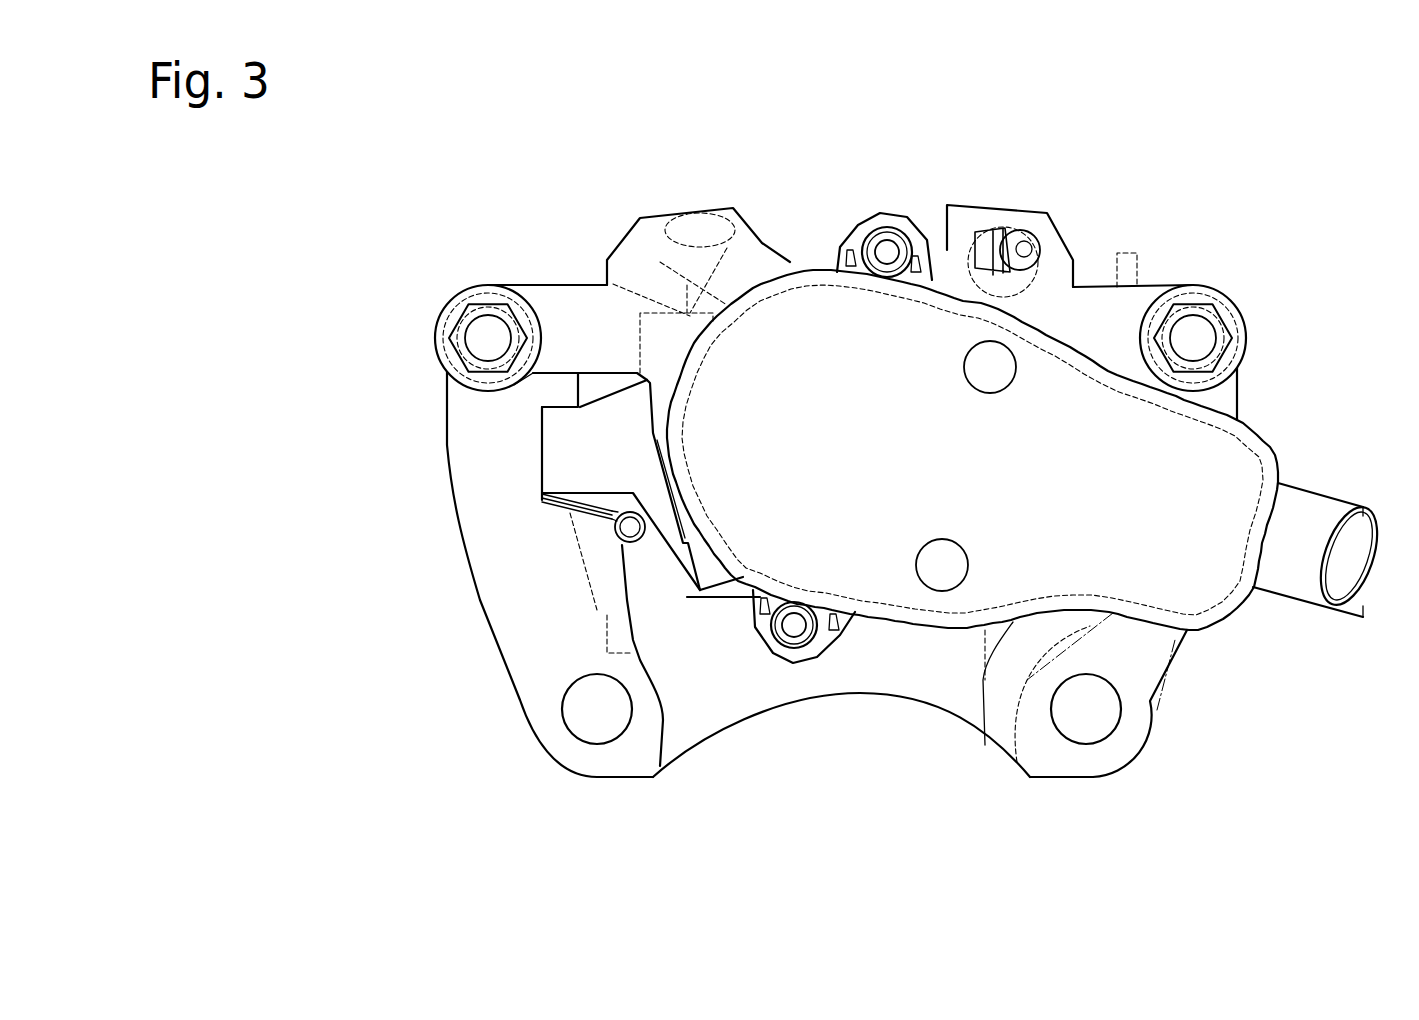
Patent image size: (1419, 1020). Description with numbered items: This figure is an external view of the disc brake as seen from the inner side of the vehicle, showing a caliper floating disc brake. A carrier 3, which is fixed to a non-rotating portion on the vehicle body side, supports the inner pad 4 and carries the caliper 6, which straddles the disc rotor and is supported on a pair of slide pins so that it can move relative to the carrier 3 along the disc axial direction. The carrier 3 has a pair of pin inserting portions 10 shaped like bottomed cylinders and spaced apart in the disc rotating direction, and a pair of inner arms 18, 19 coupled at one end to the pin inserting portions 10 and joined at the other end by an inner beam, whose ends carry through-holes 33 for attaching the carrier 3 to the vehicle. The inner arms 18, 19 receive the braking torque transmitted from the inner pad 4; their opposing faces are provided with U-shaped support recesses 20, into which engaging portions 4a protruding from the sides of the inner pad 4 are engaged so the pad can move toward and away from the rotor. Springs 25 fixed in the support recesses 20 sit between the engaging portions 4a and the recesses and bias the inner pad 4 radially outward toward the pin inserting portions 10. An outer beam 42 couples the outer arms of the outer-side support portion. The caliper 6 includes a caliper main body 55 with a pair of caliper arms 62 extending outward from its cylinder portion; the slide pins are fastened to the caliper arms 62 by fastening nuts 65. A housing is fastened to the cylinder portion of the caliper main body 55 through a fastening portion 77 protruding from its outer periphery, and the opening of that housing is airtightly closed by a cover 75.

The carrier 3 is at (1298, 273).
The inner pad 4 is at (620, 410).
The engaging portions 4a is at (540, 460).
The caliper 6 is at (798, 230).
The pin inserting portions 10 is at (464, 291).
The inner arm 18 is at (1191, 637).
The inner arm 19 is at (497, 587).
The support recesses 20 is at (546, 448).
The springs 25 is at (628, 560).
The through-holes 33 is at (596, 726).
The outer beam 42 is at (873, 684).
The caliper main body 55 is at (1105, 232).
The caliper arms 62 is at (550, 306).
The fastening nuts 65 is at (484, 339).
The cover 75 is at (1243, 470).
The fastening portion 77 is at (910, 240).